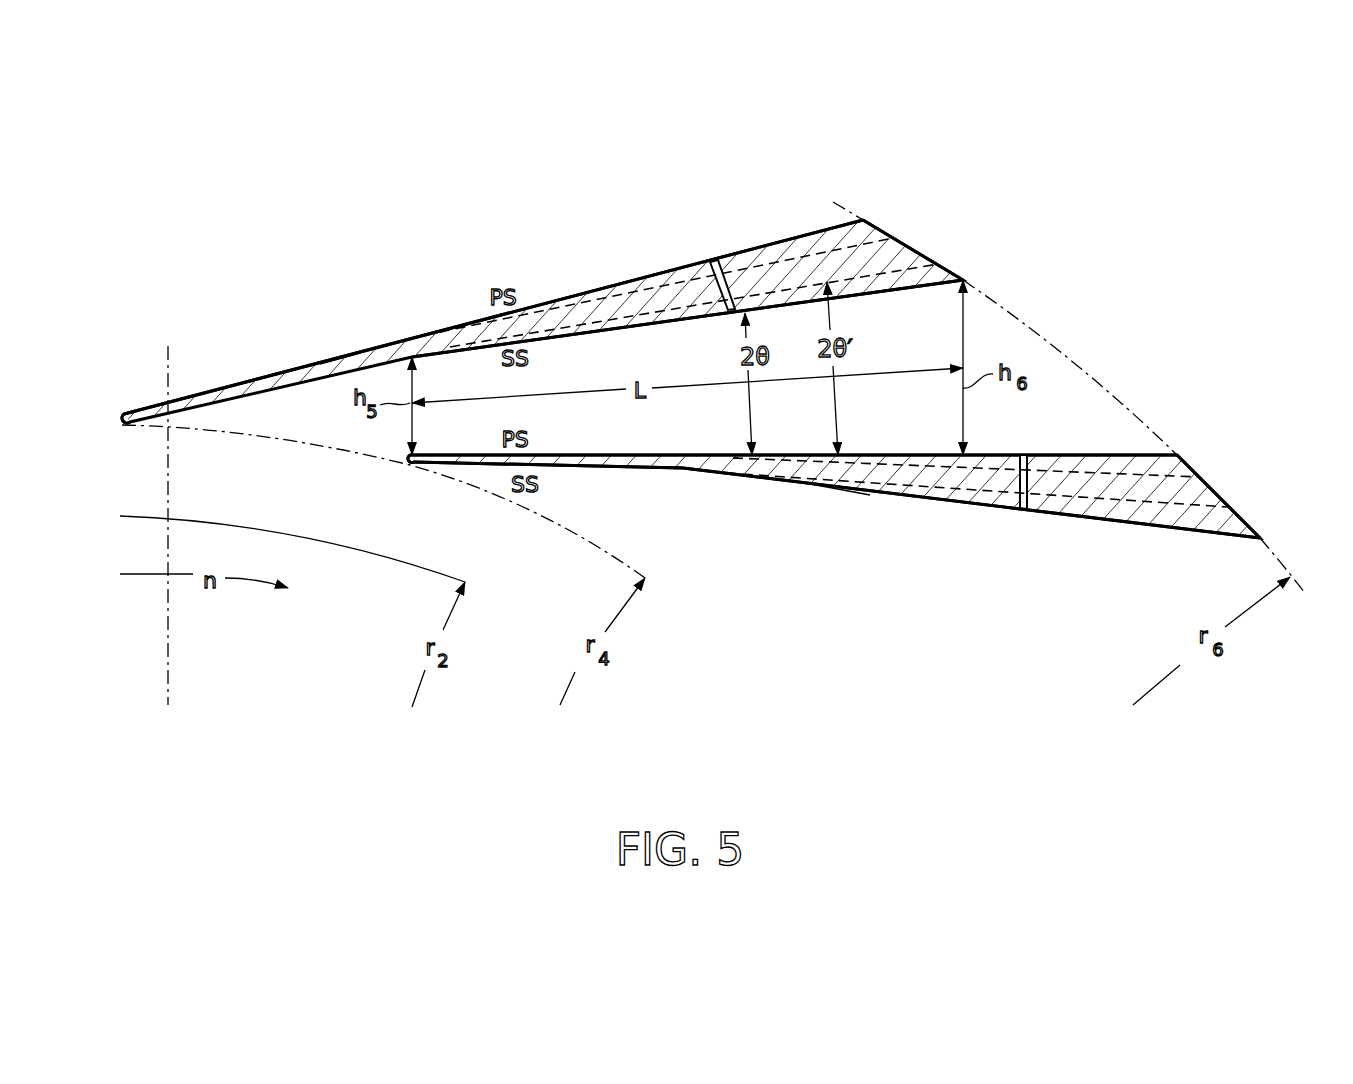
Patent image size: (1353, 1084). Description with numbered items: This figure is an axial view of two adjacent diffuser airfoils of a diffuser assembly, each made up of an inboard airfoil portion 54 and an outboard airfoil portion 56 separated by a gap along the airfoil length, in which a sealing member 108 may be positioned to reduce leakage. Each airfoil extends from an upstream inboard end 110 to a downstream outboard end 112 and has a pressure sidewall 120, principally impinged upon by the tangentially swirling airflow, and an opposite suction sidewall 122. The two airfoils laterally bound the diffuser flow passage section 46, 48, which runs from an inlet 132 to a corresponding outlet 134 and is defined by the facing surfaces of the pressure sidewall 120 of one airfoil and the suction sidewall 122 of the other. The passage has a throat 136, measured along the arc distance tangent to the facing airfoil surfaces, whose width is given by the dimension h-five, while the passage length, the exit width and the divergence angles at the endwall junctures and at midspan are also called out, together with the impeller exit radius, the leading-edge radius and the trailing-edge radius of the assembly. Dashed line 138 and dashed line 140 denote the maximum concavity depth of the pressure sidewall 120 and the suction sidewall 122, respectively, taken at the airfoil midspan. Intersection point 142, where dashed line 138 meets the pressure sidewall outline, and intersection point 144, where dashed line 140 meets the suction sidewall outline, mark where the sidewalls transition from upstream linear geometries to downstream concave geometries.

The diffuser flow passage section 46 is at (586, 441).
The diffuser flow passage section 48 is at (891, 338).
The inboard airfoil portion 54 is at (339, 351).
The outboard airfoil portion 56 is at (803, 232).
The sealing member 108 is at (712, 266).
The inboard end 110 is at (122, 412).
The outboard end 112 is at (905, 248).
The pressure sidewall 120 is at (597, 290).
The suction sidewall 122 is at (598, 332).
The inlet 132 is at (288, 421).
The outlet 134 is at (1037, 424).
The throat 136 is at (414, 453).
The dashed line 138 is at (754, 259).
The dashed line 140 is at (665, 312).
The intersection point 142 is at (415, 342).
The intersection point 144 is at (416, 358).